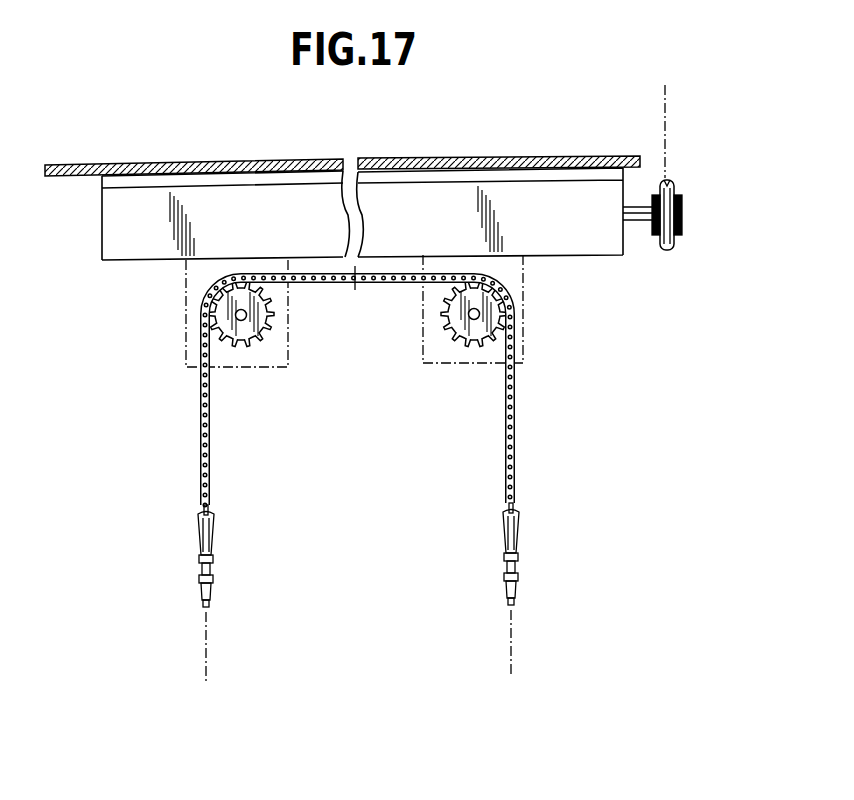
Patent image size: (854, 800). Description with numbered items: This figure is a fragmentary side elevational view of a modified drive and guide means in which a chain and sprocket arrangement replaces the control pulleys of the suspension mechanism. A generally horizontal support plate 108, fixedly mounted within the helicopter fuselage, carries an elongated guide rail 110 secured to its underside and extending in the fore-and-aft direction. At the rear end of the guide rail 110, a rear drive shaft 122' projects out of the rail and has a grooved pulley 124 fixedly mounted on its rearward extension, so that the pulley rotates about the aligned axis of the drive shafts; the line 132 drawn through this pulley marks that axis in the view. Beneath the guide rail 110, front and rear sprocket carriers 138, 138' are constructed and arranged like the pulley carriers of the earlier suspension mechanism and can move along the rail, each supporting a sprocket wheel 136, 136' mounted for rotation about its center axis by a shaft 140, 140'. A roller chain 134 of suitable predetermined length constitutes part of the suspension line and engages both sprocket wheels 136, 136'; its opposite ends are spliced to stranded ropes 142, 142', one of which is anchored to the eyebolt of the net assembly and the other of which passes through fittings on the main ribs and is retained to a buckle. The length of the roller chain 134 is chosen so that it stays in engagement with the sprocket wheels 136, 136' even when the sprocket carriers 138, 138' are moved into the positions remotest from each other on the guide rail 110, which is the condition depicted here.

The support plate 108 is at (144, 159).
The guide rail 110 is at (114, 266).
The rear drive shaft 122' is at (647, 250).
The grooved pulley 124 is at (676, 190).
The axis line 132 is at (660, 113).
The roller chain 134 is at (212, 437).
The front sprocket wheel 136 is at (244, 345).
The rear sprocket wheel 136' is at (471, 344).
The front sprocket carrier 138 is at (209, 312).
The rear sprocket carrier 138' is at (501, 309).
The shaft 140 is at (283, 319).
The shaft 140' is at (427, 318).
The stranded rope 142 is at (230, 594).
The stranded rope 142' is at (487, 589).